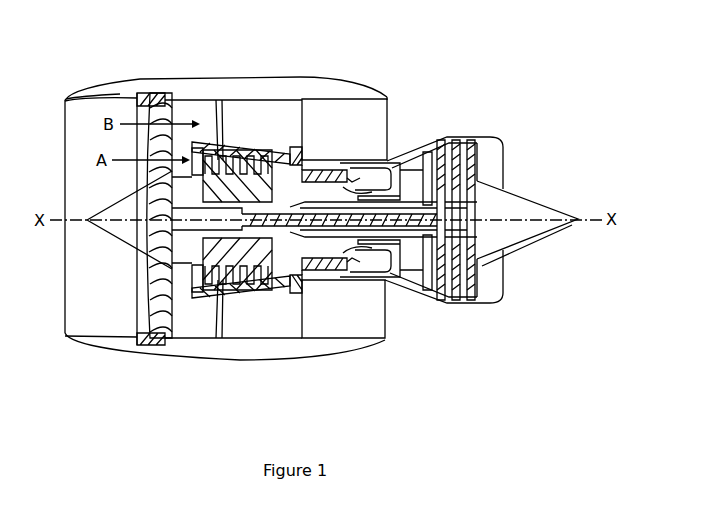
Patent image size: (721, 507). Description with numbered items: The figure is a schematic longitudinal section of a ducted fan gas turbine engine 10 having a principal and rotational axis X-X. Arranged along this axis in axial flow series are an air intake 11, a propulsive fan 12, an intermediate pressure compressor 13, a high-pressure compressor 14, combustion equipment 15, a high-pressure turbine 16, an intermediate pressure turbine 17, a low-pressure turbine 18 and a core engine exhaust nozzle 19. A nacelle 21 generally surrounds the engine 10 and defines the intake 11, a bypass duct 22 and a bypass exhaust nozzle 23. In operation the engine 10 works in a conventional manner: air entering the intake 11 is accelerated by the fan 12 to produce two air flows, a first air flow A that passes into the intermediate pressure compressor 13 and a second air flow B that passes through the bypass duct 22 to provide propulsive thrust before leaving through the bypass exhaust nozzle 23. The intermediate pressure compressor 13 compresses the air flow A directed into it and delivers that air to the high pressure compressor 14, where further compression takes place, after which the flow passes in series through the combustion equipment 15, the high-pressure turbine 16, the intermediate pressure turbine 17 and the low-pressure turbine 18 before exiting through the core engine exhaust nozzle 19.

The ducted fan gas turbine engine 10 is at (114, 59).
The air intake 11 is at (106, 97).
The propulsive fan 12 is at (150, 298).
The intermediate pressure compressor 13 is at (251, 297).
The high-pressure compressor 14 is at (314, 169).
The combustion equipment 15 is at (347, 278).
The high-pressure turbine 16 is at (393, 282).
The intermediate pressure turbine 17 is at (427, 152).
The low-pressure turbine 18 is at (438, 296).
The core engine exhaust nozzle 19 is at (497, 141).
The nacelle 21 is at (228, 76).
The bypass duct 22 is at (366, 125).
The bypass exhaust nozzle 23 is at (389, 98).